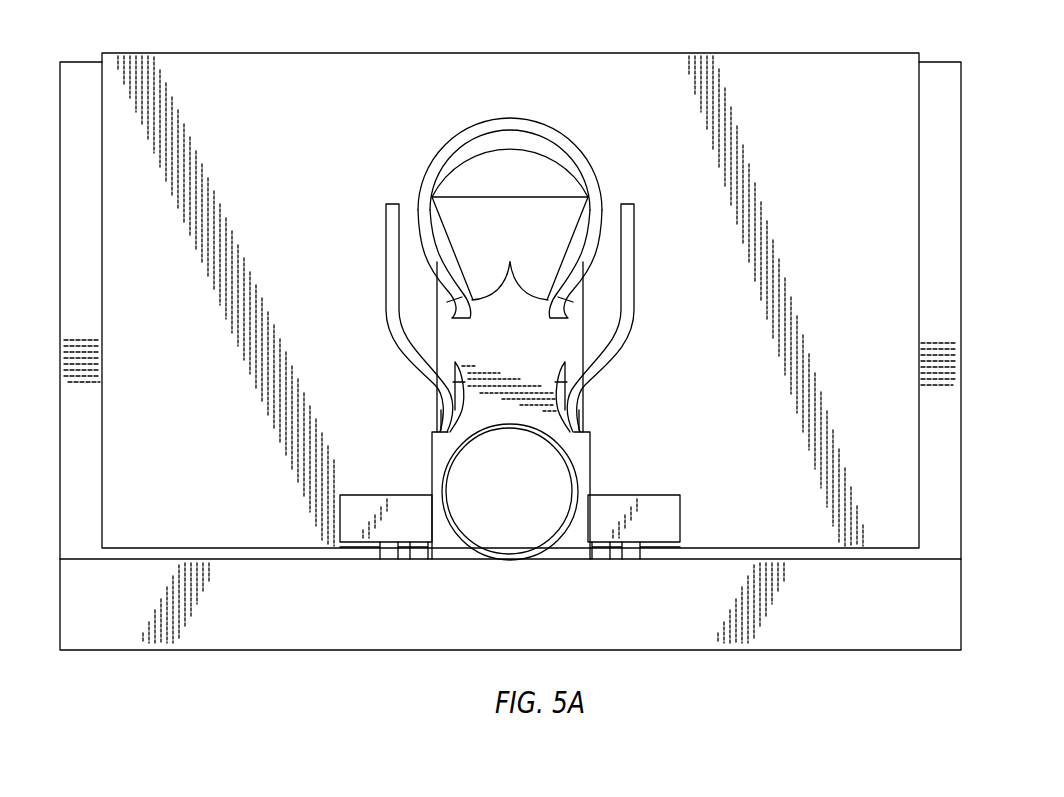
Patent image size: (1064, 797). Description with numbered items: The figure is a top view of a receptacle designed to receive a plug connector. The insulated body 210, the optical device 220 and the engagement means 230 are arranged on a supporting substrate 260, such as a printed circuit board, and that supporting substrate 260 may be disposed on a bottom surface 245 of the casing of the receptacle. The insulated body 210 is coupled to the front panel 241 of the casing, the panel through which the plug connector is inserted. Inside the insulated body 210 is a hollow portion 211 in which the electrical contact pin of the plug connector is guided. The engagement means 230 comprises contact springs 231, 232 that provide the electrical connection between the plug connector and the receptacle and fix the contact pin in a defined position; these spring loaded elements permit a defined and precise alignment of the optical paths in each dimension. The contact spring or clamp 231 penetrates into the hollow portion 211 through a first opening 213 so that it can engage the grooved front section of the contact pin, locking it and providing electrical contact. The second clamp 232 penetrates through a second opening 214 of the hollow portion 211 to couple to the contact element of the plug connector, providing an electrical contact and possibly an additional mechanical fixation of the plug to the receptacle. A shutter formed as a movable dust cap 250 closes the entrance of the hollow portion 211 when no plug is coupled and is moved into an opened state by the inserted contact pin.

The insulated body 210 is at (482, 343).
The hollow portion 211 is at (523, 355).
The first opening 213 is at (510, 262).
The second opening 214 is at (437, 407).
The optical device 220 is at (658, 502).
The engagement means 230 is at (400, 163).
The contact spring 231 is at (597, 177).
The second clamp 232 is at (385, 240).
The front panel 241 is at (928, 607).
The bottom surface 245 is at (939, 434).
The movable dust cap 250 is at (512, 532).
The supporting substrate 260 is at (830, 88).